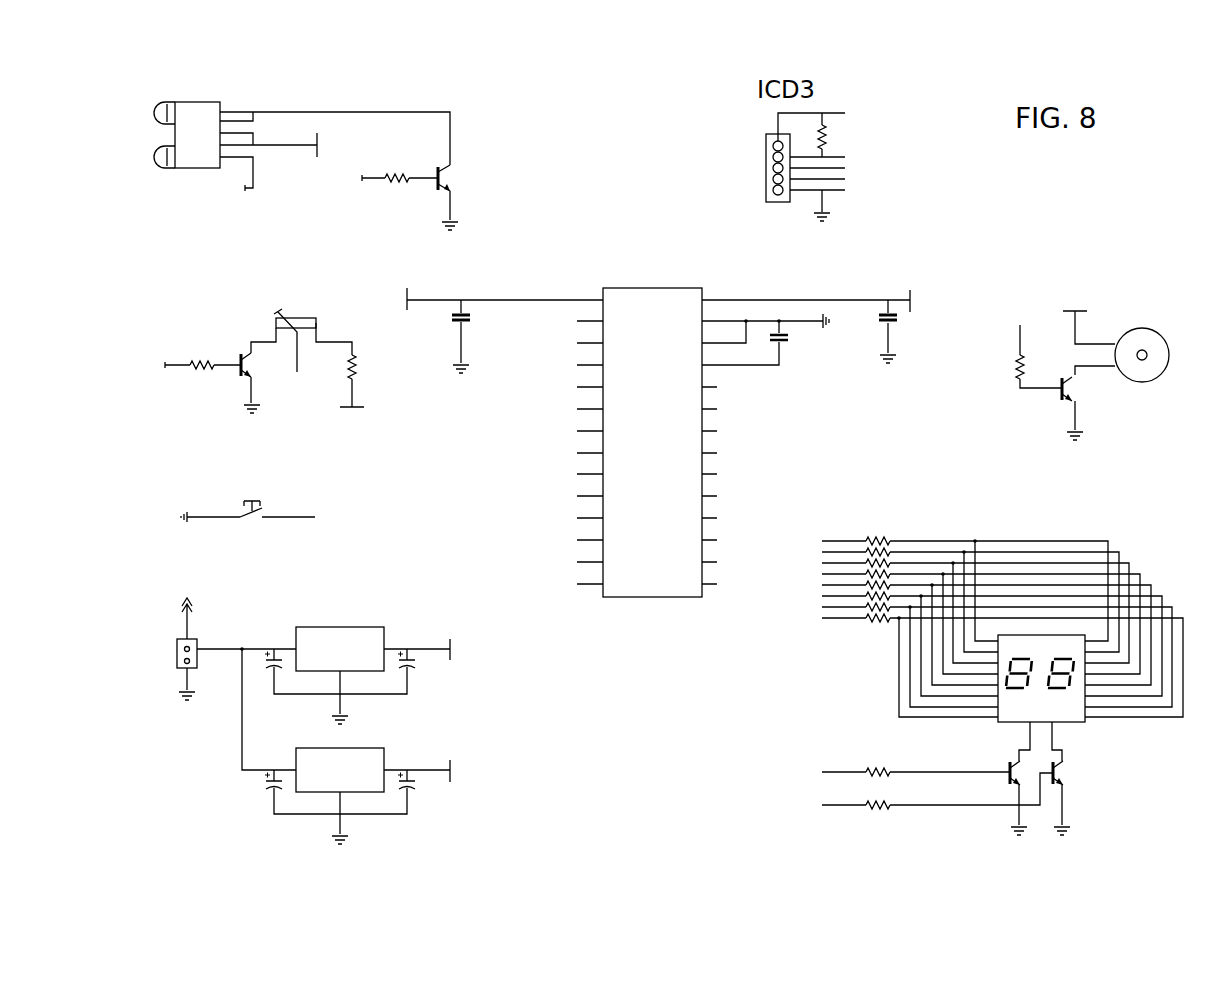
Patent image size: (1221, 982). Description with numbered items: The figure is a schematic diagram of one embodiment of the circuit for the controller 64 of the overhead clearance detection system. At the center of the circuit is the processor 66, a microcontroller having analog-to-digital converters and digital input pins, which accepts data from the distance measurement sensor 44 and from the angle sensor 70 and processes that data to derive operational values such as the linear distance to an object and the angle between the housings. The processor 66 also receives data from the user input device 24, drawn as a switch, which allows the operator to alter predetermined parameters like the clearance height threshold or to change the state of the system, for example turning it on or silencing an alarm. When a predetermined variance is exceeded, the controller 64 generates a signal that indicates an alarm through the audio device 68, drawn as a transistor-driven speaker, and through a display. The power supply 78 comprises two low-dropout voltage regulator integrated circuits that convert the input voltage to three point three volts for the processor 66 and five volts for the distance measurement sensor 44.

The distance measurement sensor 44 is at (497, 166).
The audio device 68 is at (1070, 258).
The angle sensor 70 is at (350, 428).
The user input device 24 is at (331, 497).
The processor 66 is at (764, 452).
The power supply 78 is at (474, 746).
The controller 64 is at (1099, 776).